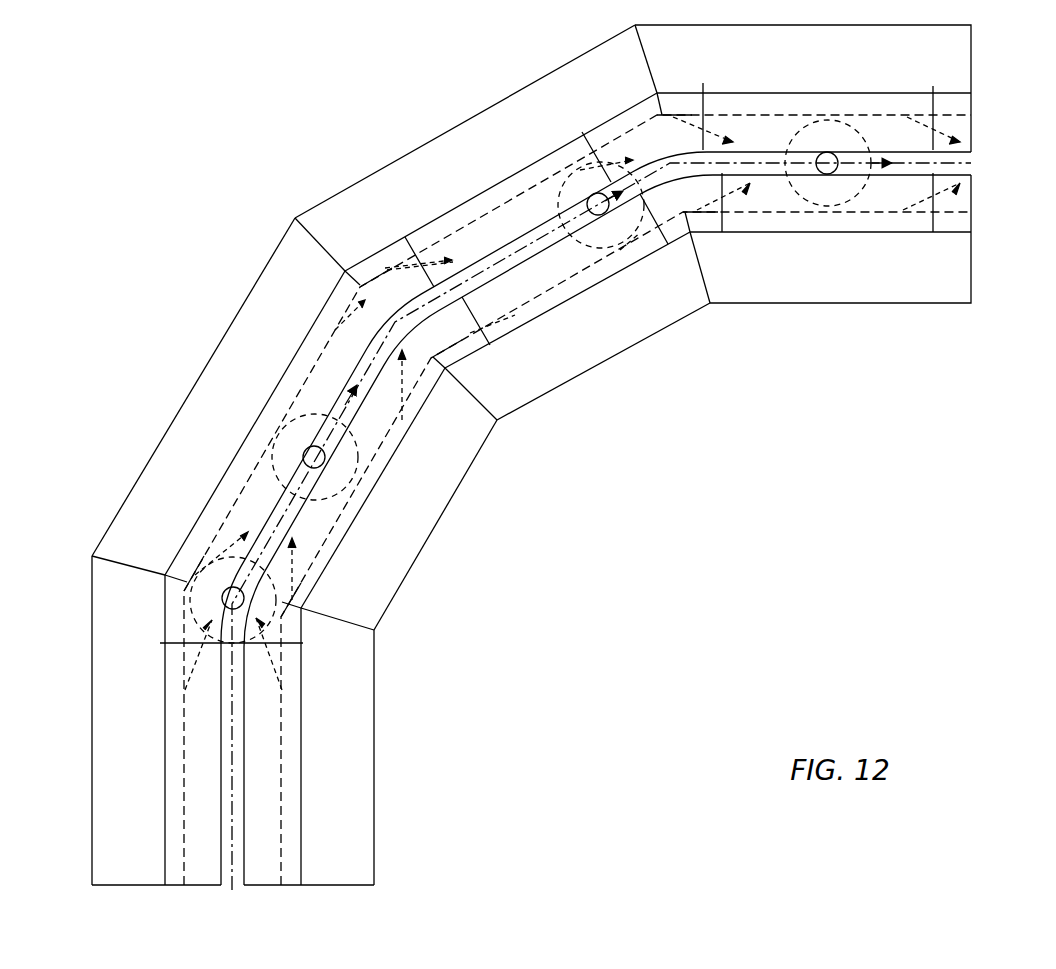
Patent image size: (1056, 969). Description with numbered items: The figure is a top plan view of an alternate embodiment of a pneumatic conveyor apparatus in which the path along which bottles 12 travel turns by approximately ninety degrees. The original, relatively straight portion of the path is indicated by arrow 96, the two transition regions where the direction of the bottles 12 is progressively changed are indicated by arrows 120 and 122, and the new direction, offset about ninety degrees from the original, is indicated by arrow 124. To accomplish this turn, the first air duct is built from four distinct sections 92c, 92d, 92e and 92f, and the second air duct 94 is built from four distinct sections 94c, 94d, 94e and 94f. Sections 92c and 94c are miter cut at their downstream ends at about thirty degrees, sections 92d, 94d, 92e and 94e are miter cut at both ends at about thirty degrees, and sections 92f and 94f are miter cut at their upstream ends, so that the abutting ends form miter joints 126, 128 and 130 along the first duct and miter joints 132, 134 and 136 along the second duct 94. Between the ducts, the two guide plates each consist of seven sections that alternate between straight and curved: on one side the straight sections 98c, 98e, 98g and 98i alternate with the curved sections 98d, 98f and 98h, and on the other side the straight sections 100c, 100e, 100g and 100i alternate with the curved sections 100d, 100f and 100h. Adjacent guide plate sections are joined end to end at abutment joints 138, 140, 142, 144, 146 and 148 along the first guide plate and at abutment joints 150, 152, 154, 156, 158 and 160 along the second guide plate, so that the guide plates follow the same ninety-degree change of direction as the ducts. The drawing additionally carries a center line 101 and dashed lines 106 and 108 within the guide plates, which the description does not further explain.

The bottles 12 is at (357, 497).
The first air duct section 92c is at (92, 836).
The first air duct section 92d is at (175, 410).
The first air duct section 92e is at (437, 138).
The first air duct section 92f is at (973, 60).
The second air duct 94 is at (542, 480).
The second air duct section 94c is at (374, 825).
The second air duct section 94d is at (440, 527).
The second air duct section 94e is at (600, 372).
The second air duct section 94f is at (850, 303).
The arrow 96 is at (226, 755).
The guide plate section 98c is at (175, 733).
The guide plate section 98d is at (170, 588).
The guide plate section 98e is at (280, 405).
The guide plate section 98f is at (347, 285).
The guide plate section 98g is at (467, 213).
The guide plate section 98h is at (655, 100).
The guide plate section 98i is at (787, 103).
The guide plate section 100c is at (287, 760).
The guide plate section 100d is at (300, 630).
The guide plate section 100e is at (398, 440).
The guide plate section 100f is at (450, 370).
The guide plate section 100g is at (545, 352).
The guide plate section 100h is at (685, 240).
The guide plate section 100i is at (887, 192).
The channel centerline 101 is at (223, 797).
The first fluid passage 106 is at (972, 127).
The second fluid passage 108 is at (977, 200).
The arrow 120 is at (350, 385).
The arrow 122 is at (600, 190).
The arrow 124 is at (887, 158).
The miter joint 126 is at (127, 560).
The miter joint 128 is at (328, 240).
The miter joint 130 is at (645, 50).
The miter joint 132 is at (368, 615).
The miter joint 134 is at (505, 405).
The miter joint 136 is at (707, 280).
The abutment joint 138 is at (175, 640).
The abutment joint 140 is at (202, 537).
The abutment joint 142 is at (325, 332).
The abutment joint 144 is at (420, 227).
The abutment joint 146 is at (587, 143).
The abutment joint 148 is at (707, 108).
The abutment joint 150 is at (301, 660).
The abutment joint 152 is at (300, 573).
The abutment joint 154 is at (417, 397).
The abutment joint 156 is at (470, 330).
The abutment joint 158 is at (647, 243).
The abutment joint 160 is at (723, 217).